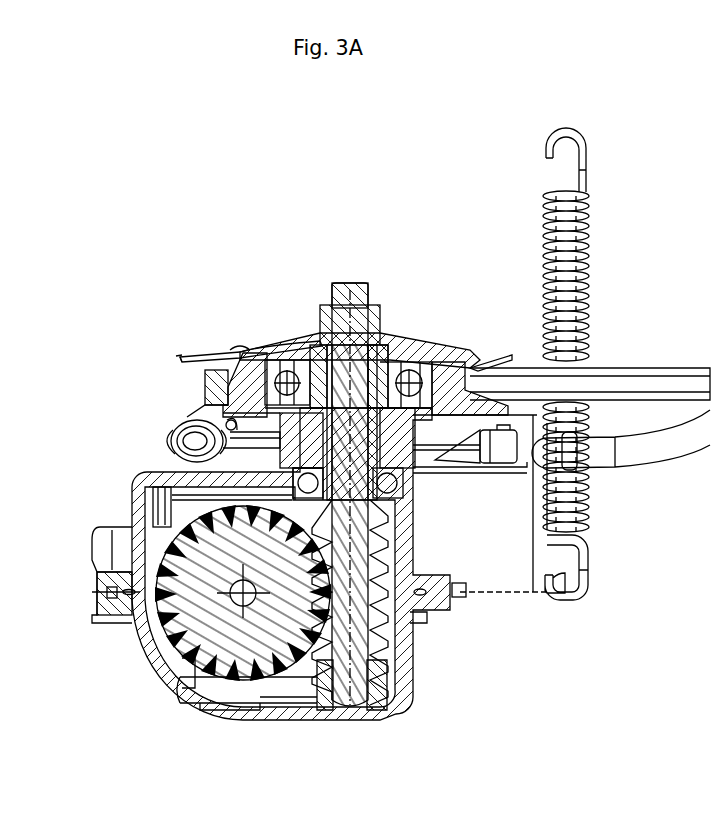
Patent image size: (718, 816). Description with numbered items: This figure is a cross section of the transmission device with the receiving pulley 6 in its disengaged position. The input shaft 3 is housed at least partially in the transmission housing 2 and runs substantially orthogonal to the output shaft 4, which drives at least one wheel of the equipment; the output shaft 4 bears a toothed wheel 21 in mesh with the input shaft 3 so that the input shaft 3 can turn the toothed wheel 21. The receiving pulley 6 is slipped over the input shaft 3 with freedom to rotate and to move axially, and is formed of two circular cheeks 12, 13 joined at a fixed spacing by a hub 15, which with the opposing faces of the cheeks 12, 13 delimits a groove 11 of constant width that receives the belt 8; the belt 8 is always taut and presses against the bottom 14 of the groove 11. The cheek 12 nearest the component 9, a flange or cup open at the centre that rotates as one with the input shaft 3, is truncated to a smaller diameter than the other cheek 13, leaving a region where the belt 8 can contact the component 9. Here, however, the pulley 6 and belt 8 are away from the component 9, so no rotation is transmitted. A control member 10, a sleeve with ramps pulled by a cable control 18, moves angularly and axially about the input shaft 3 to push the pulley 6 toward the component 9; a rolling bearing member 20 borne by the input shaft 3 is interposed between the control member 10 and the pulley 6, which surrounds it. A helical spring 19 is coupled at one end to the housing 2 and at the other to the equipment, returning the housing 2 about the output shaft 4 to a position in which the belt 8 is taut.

The transmission housing 2 is at (255, 722).
The input shaft 3 is at (358, 297).
The output shaft 4 is at (240, 600).
The receiving pulley 6 is at (262, 358).
The belt 8 is at (206, 385).
The component 9 is at (184, 358).
The control member 10 is at (386, 356).
The groove 11 is at (469, 383).
The truncated cheek 12 is at (222, 358).
The cheek 13 is at (204, 417).
The bottom of the groove 14 is at (237, 370).
The hub 15 is at (449, 380).
The cable control 18 is at (663, 450).
The spring 19 is at (576, 246).
The rolling bearing member 20 is at (421, 373).
The toothed wheel 21 is at (296, 680).